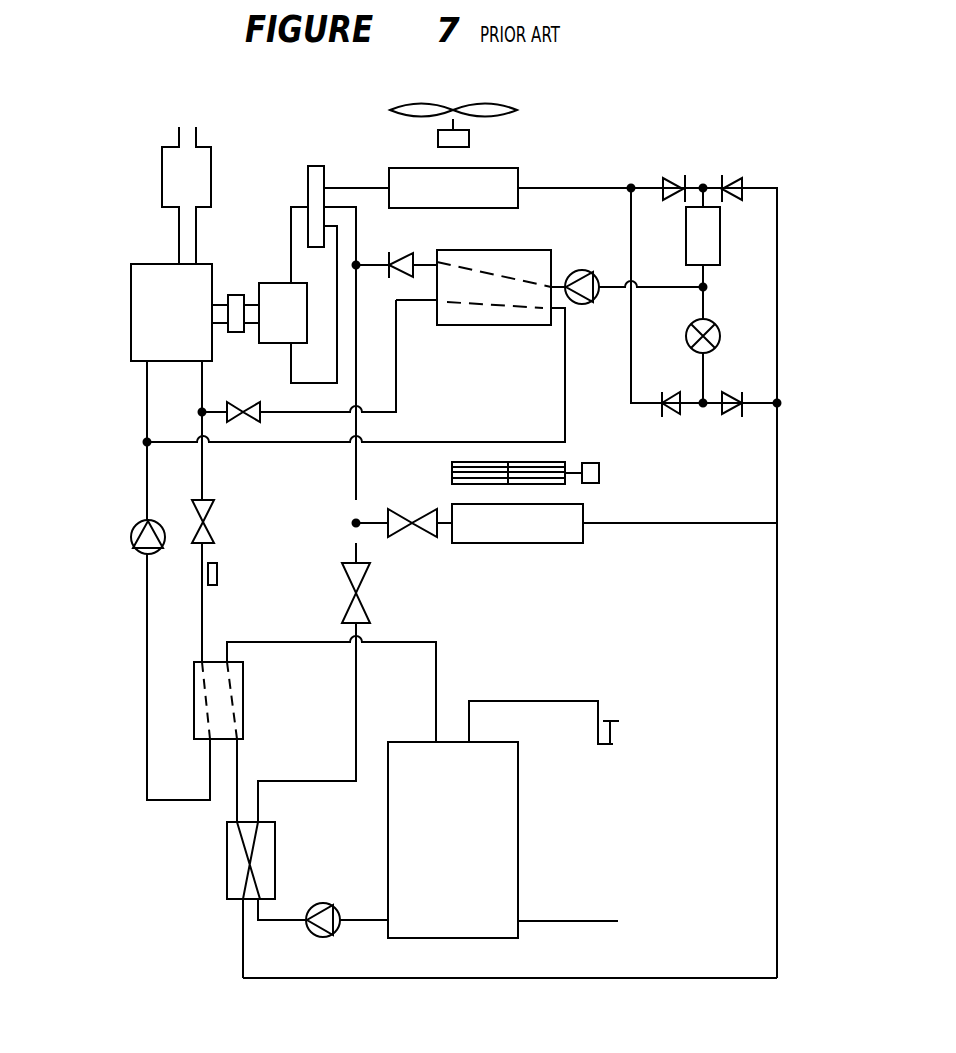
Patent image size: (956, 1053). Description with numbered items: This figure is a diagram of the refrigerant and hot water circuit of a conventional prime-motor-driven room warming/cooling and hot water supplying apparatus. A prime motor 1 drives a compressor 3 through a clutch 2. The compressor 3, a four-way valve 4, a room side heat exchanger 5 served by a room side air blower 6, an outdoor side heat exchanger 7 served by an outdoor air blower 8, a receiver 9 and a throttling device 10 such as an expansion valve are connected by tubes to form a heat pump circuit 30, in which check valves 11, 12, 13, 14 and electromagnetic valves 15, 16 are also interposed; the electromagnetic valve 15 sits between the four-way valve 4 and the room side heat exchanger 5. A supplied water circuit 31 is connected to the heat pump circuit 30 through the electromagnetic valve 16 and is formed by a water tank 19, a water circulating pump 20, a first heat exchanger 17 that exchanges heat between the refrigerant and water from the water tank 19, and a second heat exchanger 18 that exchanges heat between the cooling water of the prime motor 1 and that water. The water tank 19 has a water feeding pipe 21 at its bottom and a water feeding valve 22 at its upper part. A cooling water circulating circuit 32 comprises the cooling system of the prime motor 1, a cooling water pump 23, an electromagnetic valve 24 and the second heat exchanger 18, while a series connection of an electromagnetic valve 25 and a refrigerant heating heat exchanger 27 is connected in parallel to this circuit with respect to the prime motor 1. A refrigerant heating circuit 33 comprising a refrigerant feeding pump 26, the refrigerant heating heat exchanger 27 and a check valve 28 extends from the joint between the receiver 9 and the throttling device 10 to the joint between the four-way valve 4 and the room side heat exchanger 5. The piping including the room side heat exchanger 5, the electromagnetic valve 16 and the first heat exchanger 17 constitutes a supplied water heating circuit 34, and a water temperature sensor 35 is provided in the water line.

The prime motor 1 is at (150, 264).
The clutch 2 is at (234, 295).
The compressor 3 is at (272, 283).
The four-way valve 4 is at (308, 182).
The room side heat exchanger 5 is at (512, 543).
The room side air blower 6 is at (538, 462).
The outdoor side heat exchanger 7 is at (498, 168).
The outdoor air blower 8 is at (490, 107).
The receiver 9 is at (718, 235).
The throttling device 10 is at (713, 324).
The check valve 11 is at (667, 178).
The check valve 12 is at (727, 180).
The check valve 13 is at (672, 395).
The check valve 14 is at (728, 395).
The electromagnetic valve 15 is at (403, 511).
The electromagnetic valve 16 is at (366, 576).
The first heat exchanger 17 is at (276, 865).
The second heat exchanger 18 is at (244, 673).
The water tank 19 is at (388, 875).
The water circulating pump 20 is at (330, 904).
The water feeding pipe 21 is at (582, 921).
The water feeding valve 22 is at (622, 750).
The cooling water pump 23 is at (137, 552).
The electromagnetic valve 24 is at (211, 512).
The electromagnetic valve 25 is at (249, 402).
The refrigerant feeding pump 26 is at (585, 271).
The refrigerant heating heat exchanger 27 is at (512, 250).
The check valve 28 is at (400, 255).
The heat pump circuit 30 is at (354, 180).
The supplied water circuit 31 is at (273, 933).
The cooling water circulating circuit 32 is at (169, 812).
The refrigerant heating circuit 33 is at (558, 270).
The supplied water heating circuit 34 is at (575, 970).
The water temperature sensor 35 is at (218, 574).